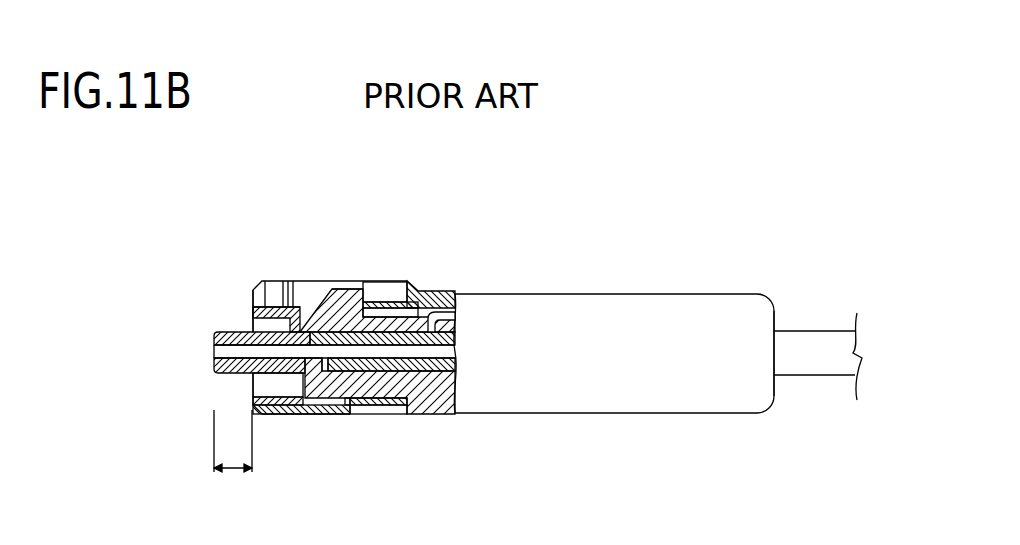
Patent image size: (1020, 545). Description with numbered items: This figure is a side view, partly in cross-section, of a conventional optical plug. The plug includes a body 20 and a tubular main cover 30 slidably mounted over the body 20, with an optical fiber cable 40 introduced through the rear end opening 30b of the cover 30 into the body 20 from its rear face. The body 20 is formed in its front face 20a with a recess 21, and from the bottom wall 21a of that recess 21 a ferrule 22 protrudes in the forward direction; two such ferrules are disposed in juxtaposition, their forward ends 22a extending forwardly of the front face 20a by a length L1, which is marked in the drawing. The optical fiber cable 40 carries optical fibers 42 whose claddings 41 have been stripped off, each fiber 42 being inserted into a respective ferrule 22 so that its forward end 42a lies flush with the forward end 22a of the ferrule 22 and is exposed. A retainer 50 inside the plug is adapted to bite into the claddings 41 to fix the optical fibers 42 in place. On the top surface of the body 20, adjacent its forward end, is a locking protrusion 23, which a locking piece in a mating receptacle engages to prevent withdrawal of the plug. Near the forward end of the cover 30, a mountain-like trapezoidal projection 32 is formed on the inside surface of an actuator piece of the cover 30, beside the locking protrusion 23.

The body 20 is at (292, 414).
The front face 20a is at (252, 318).
The recess 21 is at (252, 325).
The bottom wall 21a is at (295, 288).
The ferrule 22 is at (227, 333).
The forward end of ferrule 22a is at (214, 346).
The locking protrusion 23 is at (358, 292).
The mountain-like projection 32 is at (330, 290).
The retainer 50 is at (443, 300).
The main cover 30 is at (622, 294).
The rear end opening 30b is at (775, 331).
The optical fiber cable 40 is at (813, 375).
The cladding 41 is at (440, 400).
The optical fiber 42 is at (387, 365).
The forward end of optical fiber 42a is at (214, 356).
The length L1 is at (233, 459).